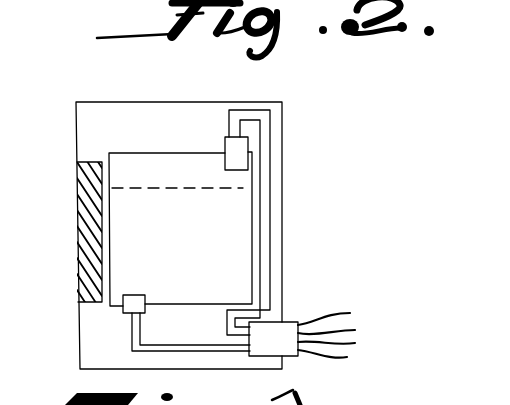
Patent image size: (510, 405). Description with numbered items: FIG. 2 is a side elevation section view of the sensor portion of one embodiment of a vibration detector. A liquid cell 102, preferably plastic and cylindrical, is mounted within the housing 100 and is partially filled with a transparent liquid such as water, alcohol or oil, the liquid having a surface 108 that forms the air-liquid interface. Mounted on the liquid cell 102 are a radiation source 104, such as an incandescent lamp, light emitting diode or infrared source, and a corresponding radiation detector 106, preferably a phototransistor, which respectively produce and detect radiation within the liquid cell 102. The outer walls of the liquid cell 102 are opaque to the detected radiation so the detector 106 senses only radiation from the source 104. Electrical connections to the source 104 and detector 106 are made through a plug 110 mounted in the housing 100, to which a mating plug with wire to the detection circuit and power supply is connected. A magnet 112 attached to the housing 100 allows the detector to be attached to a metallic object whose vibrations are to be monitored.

The housing 100 is at (280, 257).
The liquid cell 102 is at (127, 153).
The radiation source 104 is at (225, 151).
The radiation detector 106 is at (125, 313).
The liquid surface 108 is at (160, 191).
The plug 110 is at (288, 349).
The magnet 112 is at (90, 268).